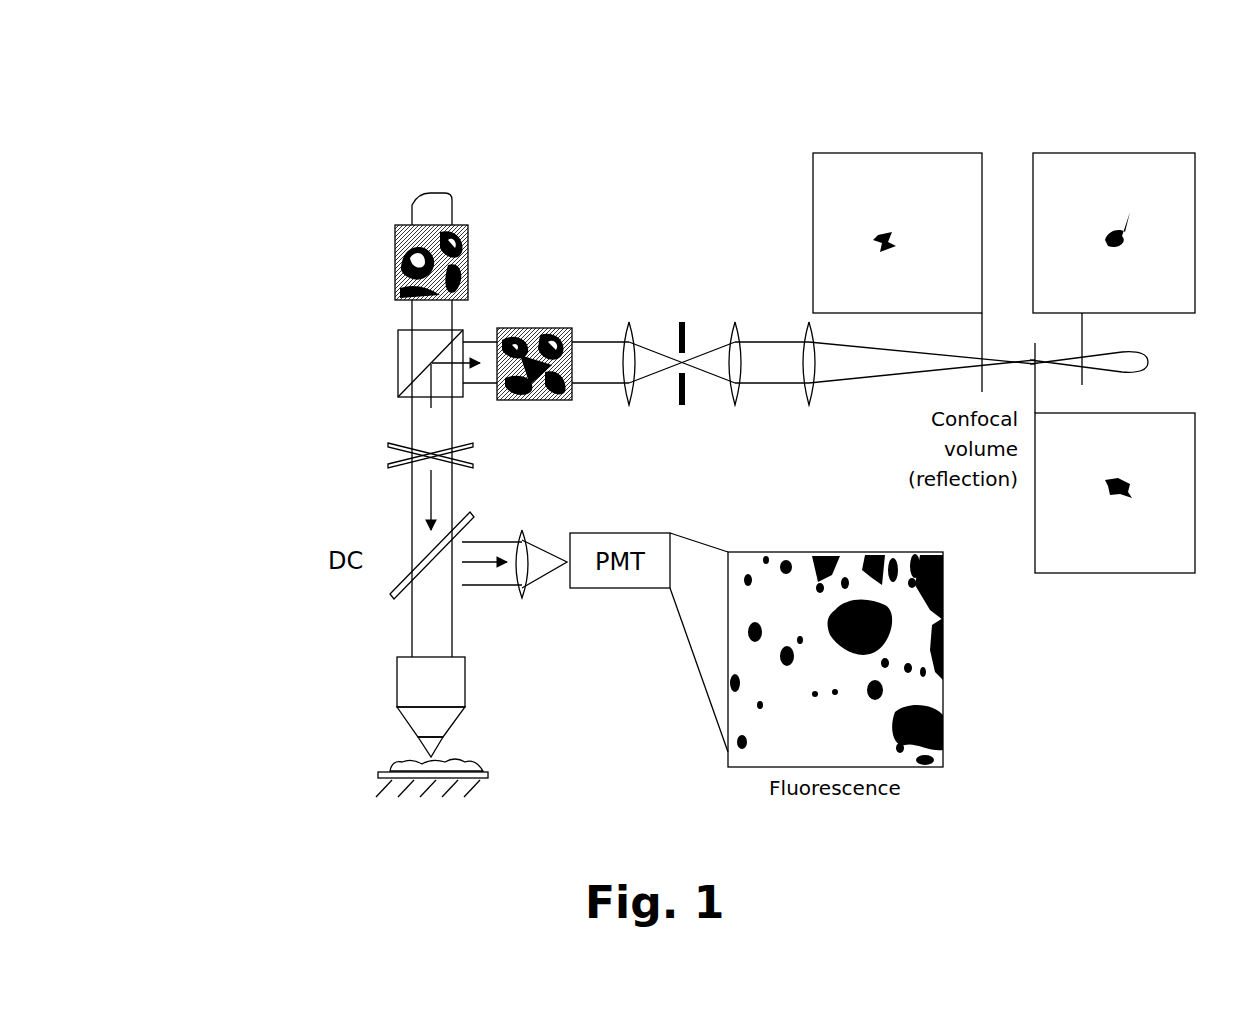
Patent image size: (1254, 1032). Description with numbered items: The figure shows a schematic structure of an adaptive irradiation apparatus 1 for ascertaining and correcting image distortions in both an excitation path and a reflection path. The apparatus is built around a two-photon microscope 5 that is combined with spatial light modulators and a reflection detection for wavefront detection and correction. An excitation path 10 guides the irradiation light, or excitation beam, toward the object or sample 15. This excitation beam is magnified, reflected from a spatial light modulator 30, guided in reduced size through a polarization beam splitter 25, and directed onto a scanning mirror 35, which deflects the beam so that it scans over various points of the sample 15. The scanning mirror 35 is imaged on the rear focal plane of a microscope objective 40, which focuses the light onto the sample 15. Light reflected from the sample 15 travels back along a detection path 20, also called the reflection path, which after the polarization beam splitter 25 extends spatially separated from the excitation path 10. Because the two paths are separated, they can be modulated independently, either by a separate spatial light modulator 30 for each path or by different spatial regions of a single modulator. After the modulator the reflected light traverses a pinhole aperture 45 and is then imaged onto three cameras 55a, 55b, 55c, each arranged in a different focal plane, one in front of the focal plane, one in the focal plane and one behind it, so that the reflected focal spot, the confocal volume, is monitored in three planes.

The adaptive irradiation apparatus 1 is at (724, 90).
The microscope 5 is at (268, 242).
The excitation path 10 is at (411, 205).
The object/sample 15 is at (342, 752).
The detection path 20 is at (598, 312).
The polarization beam splitter (PBS) 25 is at (302, 354).
The spatial light modulator (SLM) 30 is at (535, 302).
The scanning mirror (SM) 35 is at (302, 447).
The microscope objective (MO) 40 is at (320, 672).
The pinhole aperture 45 is at (694, 280).
The camera 55a is at (912, 233).
The camera 55b is at (1130, 493).
The camera 55c is at (1130, 233).